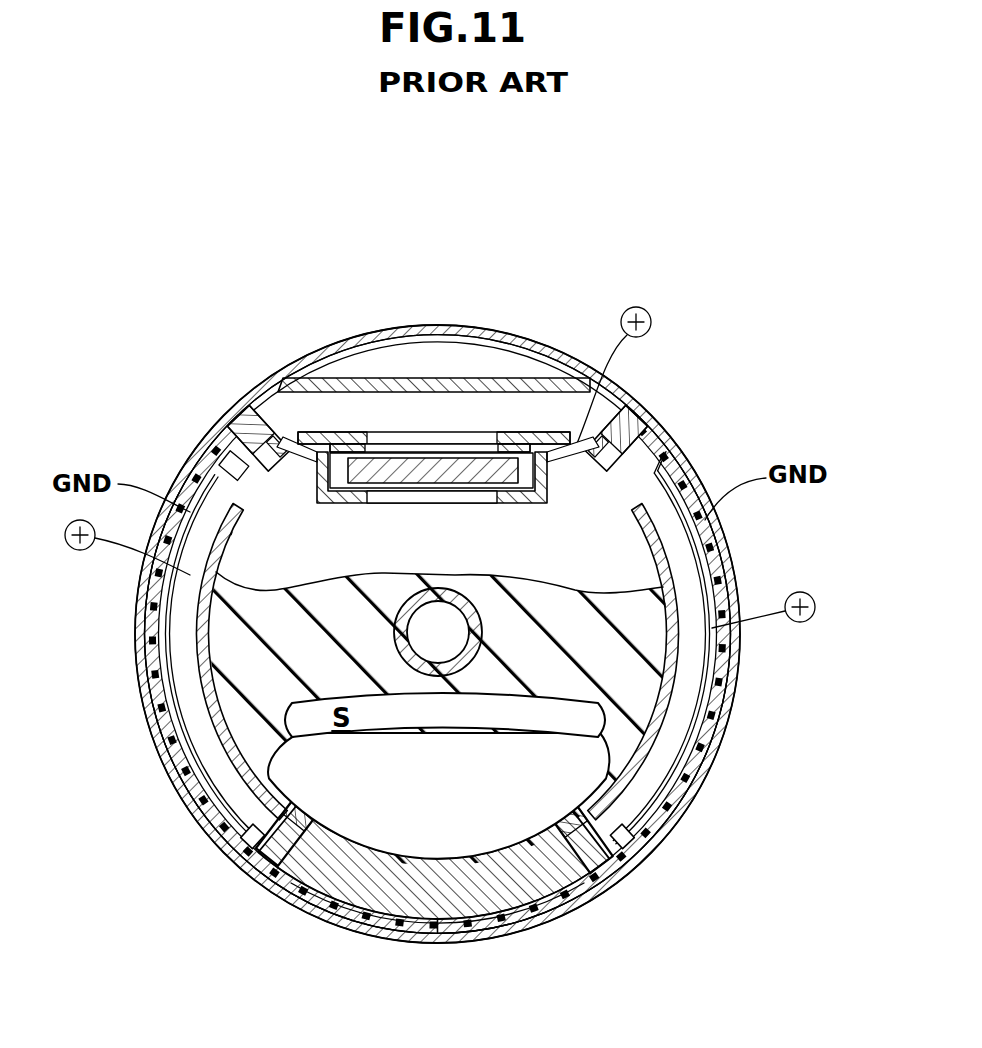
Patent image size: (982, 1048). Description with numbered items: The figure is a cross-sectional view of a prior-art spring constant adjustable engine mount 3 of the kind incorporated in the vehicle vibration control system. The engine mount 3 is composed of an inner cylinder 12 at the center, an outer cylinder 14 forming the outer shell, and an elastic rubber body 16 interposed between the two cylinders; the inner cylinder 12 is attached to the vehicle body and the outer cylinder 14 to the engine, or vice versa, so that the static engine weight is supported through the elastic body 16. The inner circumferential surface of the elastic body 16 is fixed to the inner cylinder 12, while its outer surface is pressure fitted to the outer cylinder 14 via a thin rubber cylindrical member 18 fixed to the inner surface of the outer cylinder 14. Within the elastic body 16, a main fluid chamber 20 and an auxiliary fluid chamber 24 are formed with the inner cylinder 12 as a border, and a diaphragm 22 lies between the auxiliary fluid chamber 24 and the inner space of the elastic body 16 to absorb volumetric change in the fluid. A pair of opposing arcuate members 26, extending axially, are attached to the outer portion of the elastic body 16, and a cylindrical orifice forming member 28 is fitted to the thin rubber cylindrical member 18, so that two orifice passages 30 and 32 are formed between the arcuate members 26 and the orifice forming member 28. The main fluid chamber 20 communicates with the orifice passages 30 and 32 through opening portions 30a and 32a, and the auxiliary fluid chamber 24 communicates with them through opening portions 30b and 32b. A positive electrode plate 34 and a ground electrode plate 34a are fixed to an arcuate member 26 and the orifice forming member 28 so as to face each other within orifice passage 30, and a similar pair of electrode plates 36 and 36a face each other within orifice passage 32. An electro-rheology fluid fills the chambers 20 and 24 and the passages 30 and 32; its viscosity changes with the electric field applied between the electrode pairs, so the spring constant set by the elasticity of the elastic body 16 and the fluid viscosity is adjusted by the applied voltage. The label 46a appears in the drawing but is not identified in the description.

The engine mount 3 is at (498, 268).
The inner cylinder 12 is at (393, 633).
The outer cylinder 14 is at (694, 460).
The elastic body 16 is at (628, 655).
The thin rubber cylindrical member 18 is at (565, 893).
The main fluid chamber 20 is at (462, 555).
The diaphragm 22 is at (456, 721).
The auxiliary fluid chamber 24 is at (400, 795).
The arcuate member 26 is at (200, 632).
The orifice forming member 28 is at (470, 902).
The orifice passage 30 is at (684, 567).
The opening portion 30a is at (617, 480).
The opening portion 30b is at (597, 845).
The orifice passage 32 is at (208, 512).
The opening portion 32a is at (250, 432).
The opening portion 32b is at (258, 840).
The electrode plate 34 is at (680, 703).
The electrode plate 34a is at (647, 783).
The electrode plate 36 is at (205, 700).
The electrode plate 36a is at (212, 766).
The sensor unit 46a is at (384, 503).